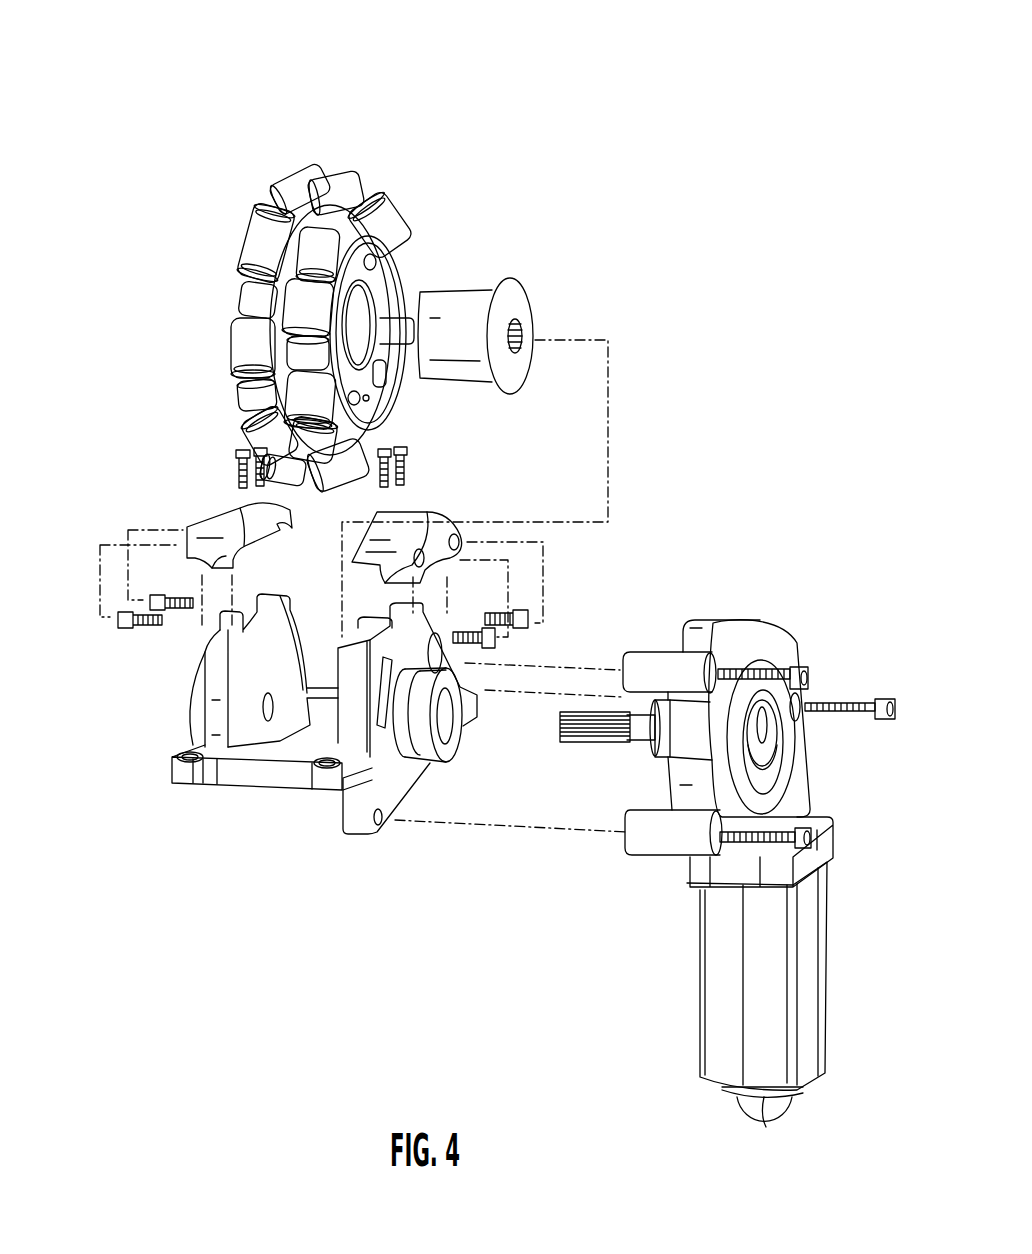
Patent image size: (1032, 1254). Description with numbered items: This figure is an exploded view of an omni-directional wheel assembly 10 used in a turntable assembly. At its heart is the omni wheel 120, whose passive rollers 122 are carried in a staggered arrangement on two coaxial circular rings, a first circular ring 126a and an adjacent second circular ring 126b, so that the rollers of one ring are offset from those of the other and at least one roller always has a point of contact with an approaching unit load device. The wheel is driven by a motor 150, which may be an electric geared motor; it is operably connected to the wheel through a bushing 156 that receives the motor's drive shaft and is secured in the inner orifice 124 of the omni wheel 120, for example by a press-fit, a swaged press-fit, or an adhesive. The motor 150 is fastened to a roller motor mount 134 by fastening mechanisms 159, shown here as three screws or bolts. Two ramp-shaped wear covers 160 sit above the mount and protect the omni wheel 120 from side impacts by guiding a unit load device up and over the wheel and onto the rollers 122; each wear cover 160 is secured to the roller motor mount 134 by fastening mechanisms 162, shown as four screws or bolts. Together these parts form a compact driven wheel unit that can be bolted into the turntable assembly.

The omni-wheel drive assembly 10 is at (128, 71).
The omni wheel 120 is at (273, 218).
The rollers 122 is at (362, 178).
The inner orifice 124 is at (352, 327).
The first circular ring 126a is at (318, 258).
The second circular ring 126b is at (243, 303).
The roller motor mount 134 is at (265, 768).
The motor 150 is at (770, 725).
The bushing 156 is at (517, 297).
The fastening mechanisms 159 is at (827, 828).
The wear cover 160 is at (222, 512).
The fastening mechanisms 162 is at (123, 615).